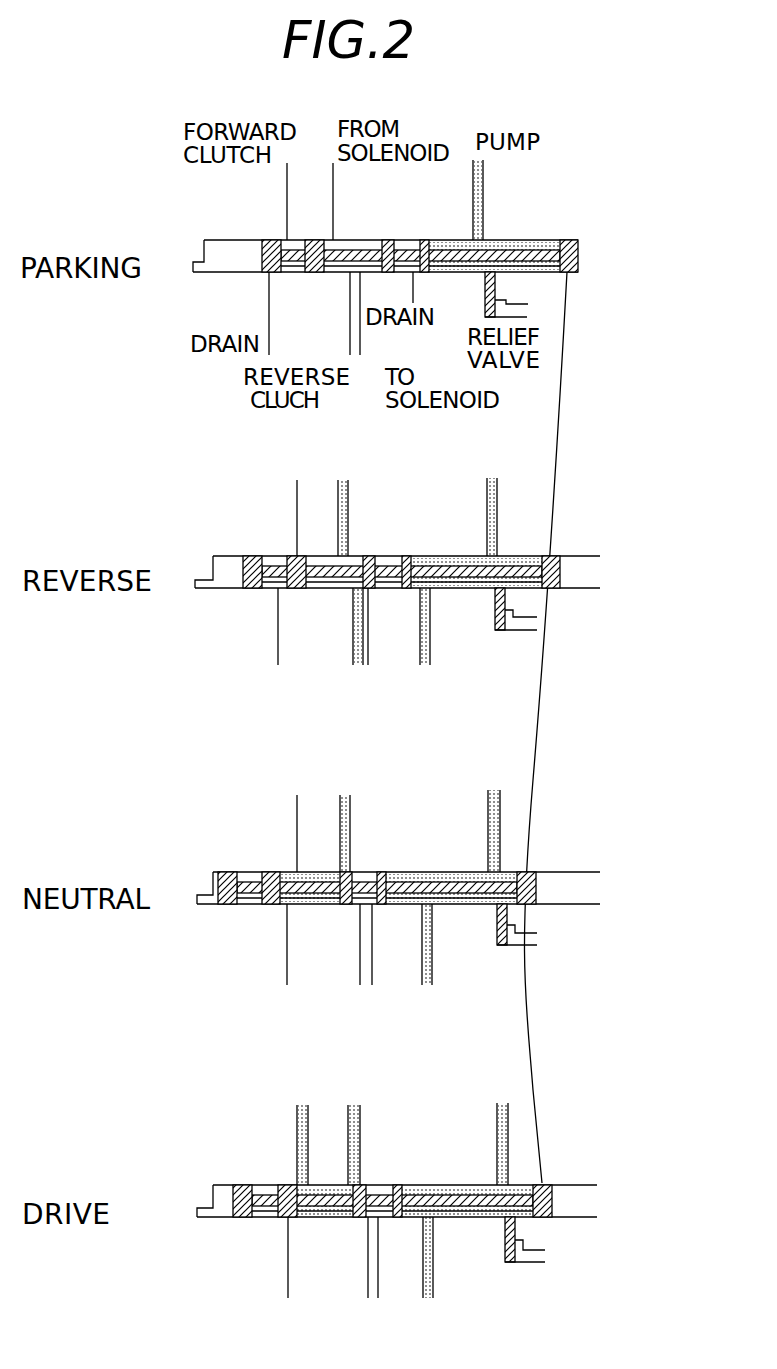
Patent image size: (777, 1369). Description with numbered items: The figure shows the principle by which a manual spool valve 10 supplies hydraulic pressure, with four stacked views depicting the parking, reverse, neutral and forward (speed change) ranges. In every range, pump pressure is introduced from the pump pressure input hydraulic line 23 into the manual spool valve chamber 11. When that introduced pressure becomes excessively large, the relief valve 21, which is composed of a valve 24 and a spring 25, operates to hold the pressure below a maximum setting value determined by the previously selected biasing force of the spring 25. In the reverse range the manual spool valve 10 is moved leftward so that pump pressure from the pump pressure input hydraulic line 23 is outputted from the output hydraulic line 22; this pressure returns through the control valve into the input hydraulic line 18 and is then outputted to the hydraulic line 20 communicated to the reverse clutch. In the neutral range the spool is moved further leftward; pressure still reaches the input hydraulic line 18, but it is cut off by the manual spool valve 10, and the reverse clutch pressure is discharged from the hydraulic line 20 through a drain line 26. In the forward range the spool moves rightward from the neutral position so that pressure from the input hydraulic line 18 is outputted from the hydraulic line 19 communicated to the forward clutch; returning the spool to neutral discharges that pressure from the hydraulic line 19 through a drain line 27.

The manual spool valve 10 is at (578, 248).
The manual spool valve chamber 11 is at (523, 239).
The input hydraulic line 18 is at (333, 210).
The hydraulic line 19 is at (287, 210).
The hydraulic line 20 is at (350, 308).
The relief valve 21 is at (497, 283).
The output hydraulic line 22 is at (432, 971).
The pump pressure input hydraulic line 23 is at (484, 178).
The valve 24 is at (485, 291).
The spring 25 is at (497, 312).
The drain line 26 is at (360, 344).
The drain line 27 is at (269, 308).